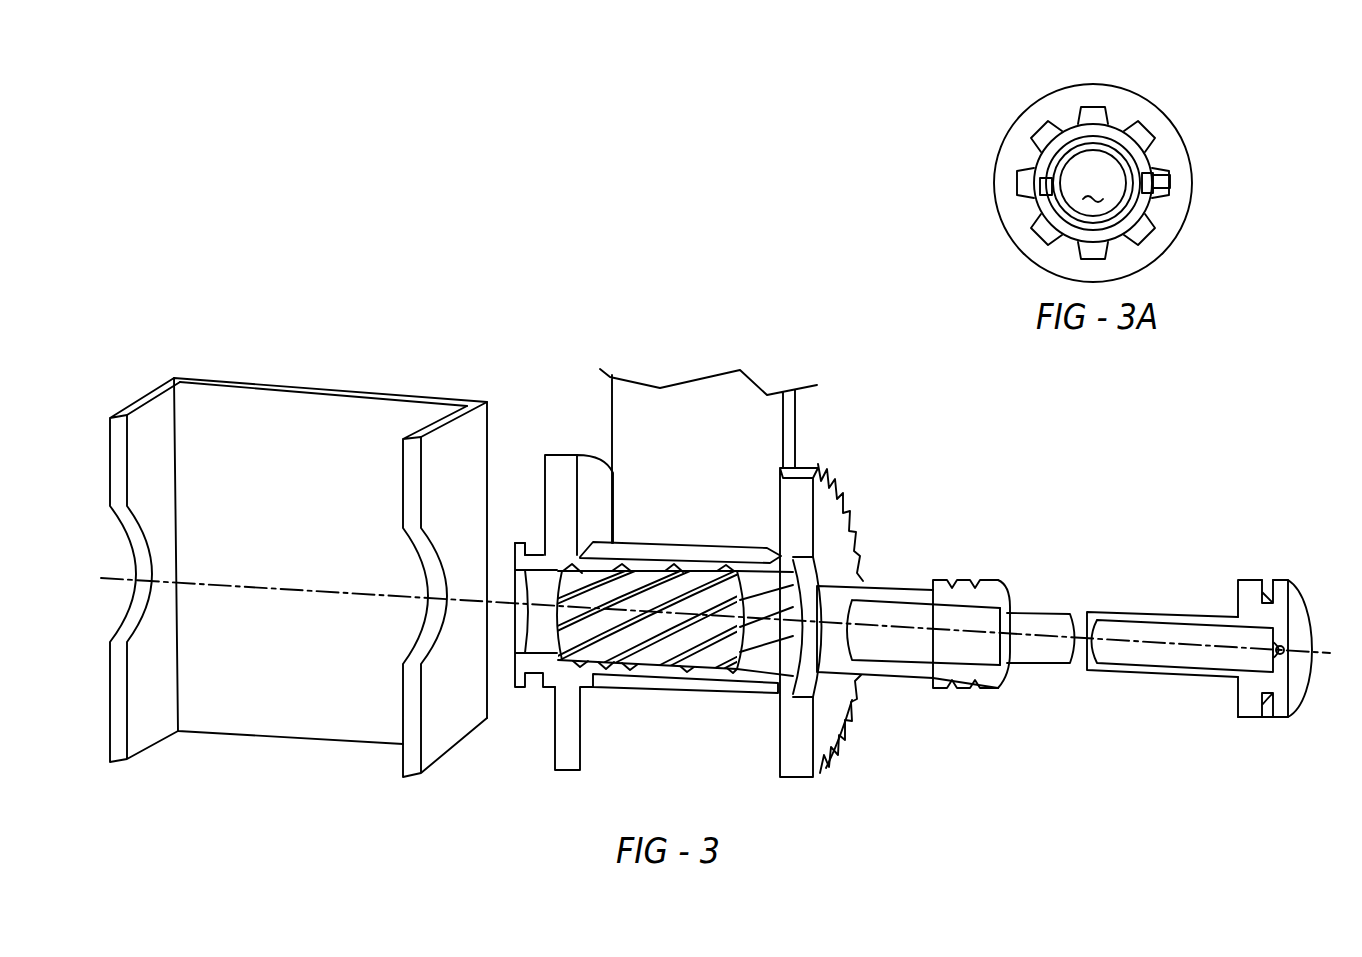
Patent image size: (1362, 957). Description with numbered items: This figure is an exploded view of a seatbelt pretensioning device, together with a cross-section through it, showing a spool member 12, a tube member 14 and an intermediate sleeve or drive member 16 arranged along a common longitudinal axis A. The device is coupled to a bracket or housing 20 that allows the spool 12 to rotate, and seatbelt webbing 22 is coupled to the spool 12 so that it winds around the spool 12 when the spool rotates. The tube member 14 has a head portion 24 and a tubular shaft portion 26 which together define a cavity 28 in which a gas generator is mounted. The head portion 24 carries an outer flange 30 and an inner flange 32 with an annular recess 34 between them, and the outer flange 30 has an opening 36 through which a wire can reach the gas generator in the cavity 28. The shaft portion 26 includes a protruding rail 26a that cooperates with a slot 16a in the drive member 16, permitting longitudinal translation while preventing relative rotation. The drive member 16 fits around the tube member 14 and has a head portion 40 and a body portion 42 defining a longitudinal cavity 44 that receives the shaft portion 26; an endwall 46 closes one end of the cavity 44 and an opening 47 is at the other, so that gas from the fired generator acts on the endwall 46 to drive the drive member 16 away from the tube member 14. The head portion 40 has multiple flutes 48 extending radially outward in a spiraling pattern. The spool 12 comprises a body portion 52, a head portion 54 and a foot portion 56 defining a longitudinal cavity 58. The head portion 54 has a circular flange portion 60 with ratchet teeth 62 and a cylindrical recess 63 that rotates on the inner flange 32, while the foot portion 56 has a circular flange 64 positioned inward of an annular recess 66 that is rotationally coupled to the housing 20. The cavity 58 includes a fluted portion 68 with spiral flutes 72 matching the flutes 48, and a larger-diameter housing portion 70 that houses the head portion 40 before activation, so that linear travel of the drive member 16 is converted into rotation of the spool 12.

In FIG. 3, the spool member 12 is at (1076, 592).
In FIG. 3, the tube member 14 is at (1211, 636).
In FIG. 3, the drive member 16 is at (1067, 625).
In FIG. 3A, the drive member 16 is at (1098, 95).
In FIG. 3A, the slot 16a is at (1150, 175).
In FIG. 3, the housing 20 is at (353, 691).
In FIG. 3, the seatbelt webbing 22 is at (690, 437).
In FIG. 3, the head portion 24 is at (1295, 598).
In FIG. 3, the tubular shaft portion 26 is at (1212, 675).
In FIG. 3A, the tubular shaft portion 26 is at (1127, 160).
In FIG. 3A, the protruding rail 26a is at (1155, 180).
In FIG. 3, the cavity 28 is at (1165, 653).
In FIG. 3A, the cavity 28 is at (1093, 185).
In FIG. 3, the outer flange 30 is at (1052, 653).
In FIG. 3, the inner flange 32 is at (1252, 717).
In FIG. 3, the annular recess 34 is at (1268, 590).
In FIG. 3, the opening 36 is at (1286, 650).
In FIG. 3, the head portion 40 is at (967, 673).
In FIG. 3, the body portion 42 is at (897, 680).
In FIG. 3A, the body portion 42 is at (1157, 200).
In FIG. 3, the longitudinal cavity 44 is at (970, 625).
In FIG. 3, the endwall 46 is at (835, 607).
In FIG. 3, the opening 47 is at (987, 650).
In FIG. 3, the flutes 48 is at (958, 580).
In FIG. 3, the body portion 52 is at (730, 687).
In FIG. 3A, the body portion 52 is at (1037, 161).
In FIG. 3, the head portion 54 is at (798, 773).
In FIG. 3, the foot portion 56 is at (629, 567).
In FIG. 3, the longitudinal cavity 58 is at (520, 652).
In FIG. 3, the flange portion 60 is at (827, 747).
In FIG. 3, the ratchet teeth 62 is at (850, 727).
In FIG. 3, the cylindrical recess 63 is at (810, 688).
In FIG. 3, the circular flange 64 is at (552, 542).
In FIG. 3, the annular recess 66 is at (541, 546).
In FIG. 3, the fluted portion 68 is at (670, 640).
In FIG. 3, the housing portion 70 is at (767, 657).
In FIG. 3, the spiral flutes 72 is at (630, 640).
In FIG. 3A, the spiral flutes 72 is at (1038, 135).
In FIG. 3, the longitudinal axis A is at (1185, 640).